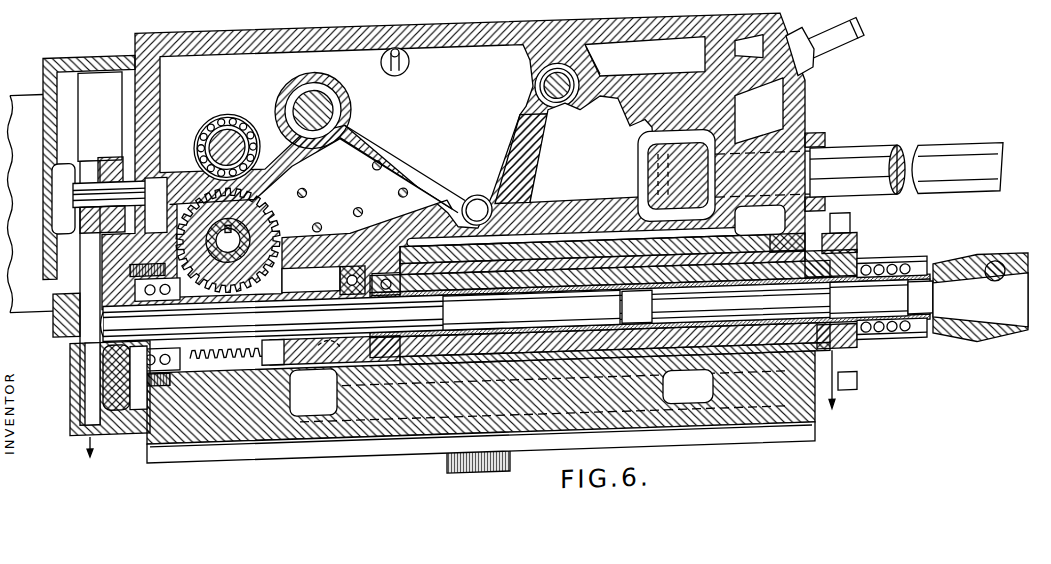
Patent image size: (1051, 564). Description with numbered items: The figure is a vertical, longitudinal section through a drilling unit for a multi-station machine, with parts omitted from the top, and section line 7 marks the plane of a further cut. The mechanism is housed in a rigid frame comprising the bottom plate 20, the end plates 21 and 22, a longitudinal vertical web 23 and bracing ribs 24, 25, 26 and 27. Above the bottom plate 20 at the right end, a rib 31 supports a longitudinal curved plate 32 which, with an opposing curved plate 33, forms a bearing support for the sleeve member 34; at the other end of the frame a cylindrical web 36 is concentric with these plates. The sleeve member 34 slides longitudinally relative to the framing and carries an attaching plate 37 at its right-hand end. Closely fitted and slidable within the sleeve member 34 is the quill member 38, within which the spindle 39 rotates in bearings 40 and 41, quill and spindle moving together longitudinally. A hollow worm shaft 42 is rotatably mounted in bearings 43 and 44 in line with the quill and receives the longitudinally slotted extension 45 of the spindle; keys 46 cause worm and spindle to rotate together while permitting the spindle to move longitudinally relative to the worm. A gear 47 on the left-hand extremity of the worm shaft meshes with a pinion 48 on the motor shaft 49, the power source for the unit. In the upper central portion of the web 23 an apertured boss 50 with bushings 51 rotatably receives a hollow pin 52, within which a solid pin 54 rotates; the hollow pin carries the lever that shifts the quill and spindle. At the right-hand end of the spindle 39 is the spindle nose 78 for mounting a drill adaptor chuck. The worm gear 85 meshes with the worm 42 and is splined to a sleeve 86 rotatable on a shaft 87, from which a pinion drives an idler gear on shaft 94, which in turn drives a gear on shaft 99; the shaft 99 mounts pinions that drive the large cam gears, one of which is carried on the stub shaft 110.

The section line 7- 7 is at (460, 413).
The bottom plate 20 is at (725, 434).
The end plate 21 is at (808, 93).
The end plate 22 is at (135, 89).
The longitudinal vertical web 23 is at (346, 140).
The bracing rib 24 is at (740, 116).
The bracing rib 25 is at (557, 196).
The bracing rib 26 is at (383, 135).
The bracing rib 27 is at (630, 76).
The rib 31 is at (400, 410).
The curved plate 32 is at (578, 391).
The curved plate 33 is at (543, 248).
The sleeve member 34 is at (498, 248).
The cylindrical web 36 is at (322, 262).
The attaching plate 37 is at (852, 230).
The quill member 38 is at (862, 272).
The spindle 39 is at (770, 322).
The bearing 40 is at (892, 274).
The bearing 41 is at (406, 230).
The worm shaft 42 is at (236, 350).
The bearing 43 is at (338, 378).
The bearing 44 is at (170, 356).
The slotted extension 45 is at (268, 358).
The keys 46 is at (318, 322).
The gear 47 is at (110, 374).
The pinion 48 is at (120, 145).
The motor shaft 49 is at (85, 228).
The apertured boss 50 is at (534, 78).
The bushings 51 is at (600, 72).
The hollow pin 52 is at (540, 96).
The solid pin 54 is at (566, 110).
The spindle nose 78 is at (1002, 280).
The worm gear 85 is at (250, 210).
The sleeve 86 is at (240, 235).
The shaft 87 is at (252, 238).
The shaft 94 is at (212, 142).
The shaft 99 is at (330, 104).
The stub shaft 110 is at (480, 196).